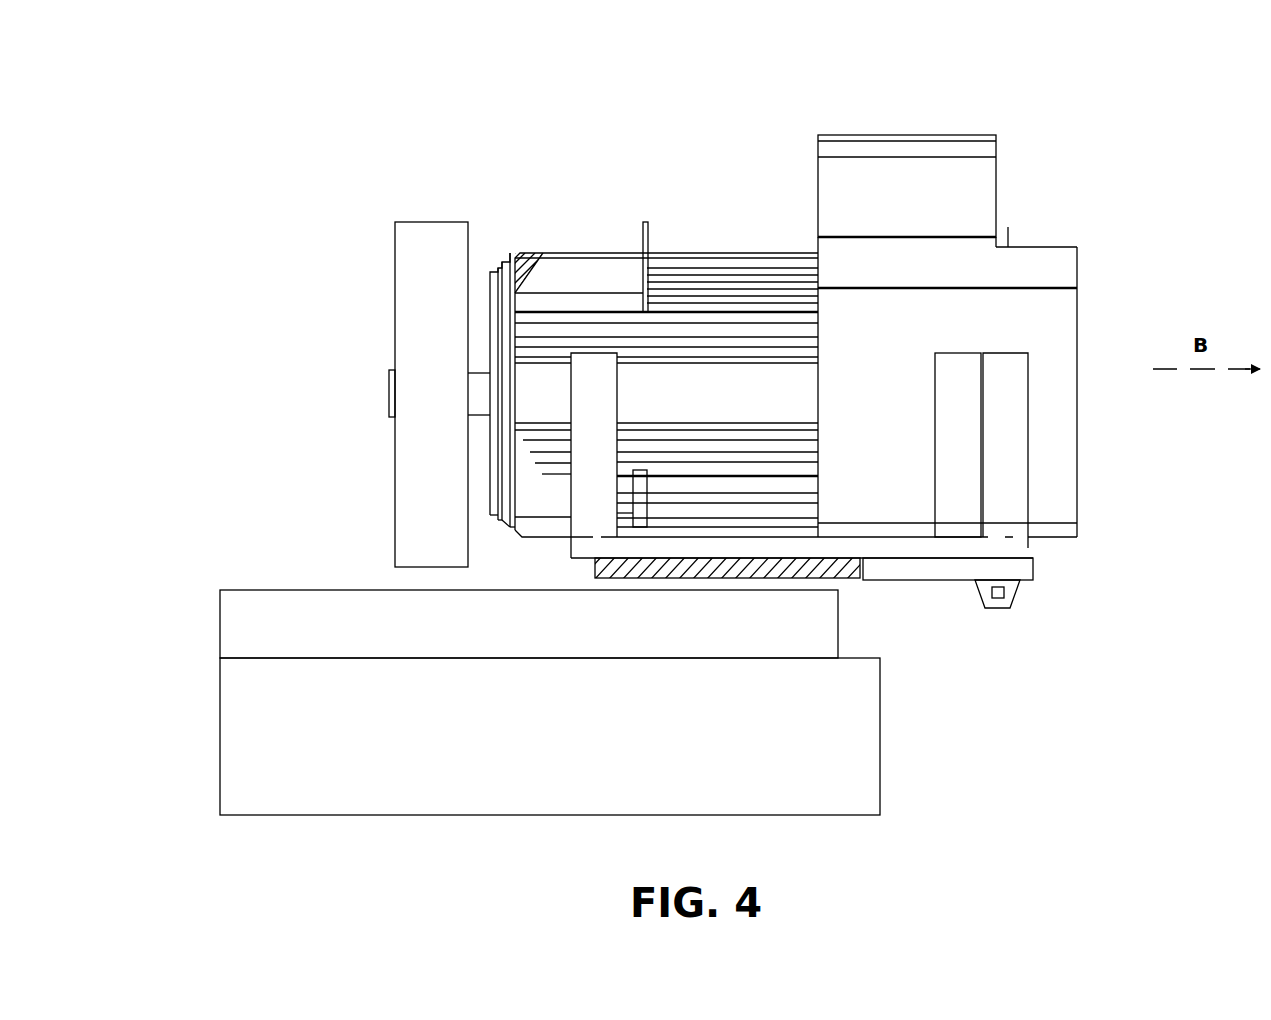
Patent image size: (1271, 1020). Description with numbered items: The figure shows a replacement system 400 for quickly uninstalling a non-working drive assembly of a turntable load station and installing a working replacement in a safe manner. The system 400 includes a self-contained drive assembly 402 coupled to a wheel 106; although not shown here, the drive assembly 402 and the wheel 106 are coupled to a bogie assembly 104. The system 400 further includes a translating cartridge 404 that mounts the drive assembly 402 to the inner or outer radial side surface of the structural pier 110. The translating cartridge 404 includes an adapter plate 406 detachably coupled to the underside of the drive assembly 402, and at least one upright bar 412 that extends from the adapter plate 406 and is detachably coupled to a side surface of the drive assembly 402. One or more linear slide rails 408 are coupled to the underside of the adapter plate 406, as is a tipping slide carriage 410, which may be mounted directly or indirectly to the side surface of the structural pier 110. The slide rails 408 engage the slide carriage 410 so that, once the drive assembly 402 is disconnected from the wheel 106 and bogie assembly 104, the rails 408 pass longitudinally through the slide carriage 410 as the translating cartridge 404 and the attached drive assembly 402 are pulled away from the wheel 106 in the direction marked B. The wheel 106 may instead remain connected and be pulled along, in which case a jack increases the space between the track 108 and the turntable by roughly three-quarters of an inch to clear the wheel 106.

The replacement system 400 is at (131, 66).
The bogie assembly 104 is at (392, 447).
The wheel 106 is at (430, 222).
The track 108 is at (220, 627).
The structural pier 110 is at (220, 740).
The drive assembly 402 is at (1080, 305).
The translating cartridge 404 is at (1013, 440).
The adapter plate 406 is at (1020, 548).
The linear slide rails 408 is at (847, 573).
The tipping slide carriage 410 is at (932, 573).
The upright bar 412 is at (597, 370).